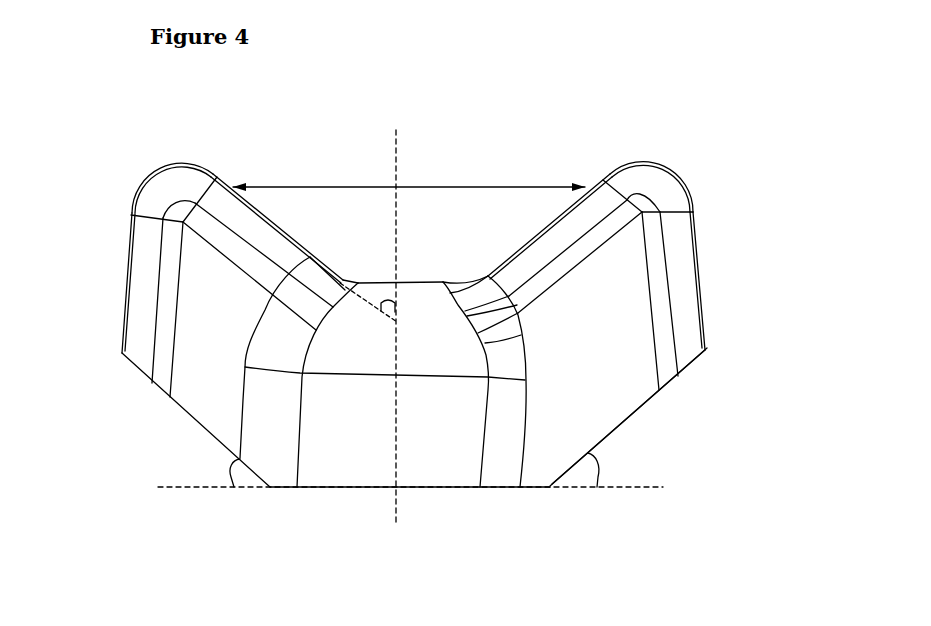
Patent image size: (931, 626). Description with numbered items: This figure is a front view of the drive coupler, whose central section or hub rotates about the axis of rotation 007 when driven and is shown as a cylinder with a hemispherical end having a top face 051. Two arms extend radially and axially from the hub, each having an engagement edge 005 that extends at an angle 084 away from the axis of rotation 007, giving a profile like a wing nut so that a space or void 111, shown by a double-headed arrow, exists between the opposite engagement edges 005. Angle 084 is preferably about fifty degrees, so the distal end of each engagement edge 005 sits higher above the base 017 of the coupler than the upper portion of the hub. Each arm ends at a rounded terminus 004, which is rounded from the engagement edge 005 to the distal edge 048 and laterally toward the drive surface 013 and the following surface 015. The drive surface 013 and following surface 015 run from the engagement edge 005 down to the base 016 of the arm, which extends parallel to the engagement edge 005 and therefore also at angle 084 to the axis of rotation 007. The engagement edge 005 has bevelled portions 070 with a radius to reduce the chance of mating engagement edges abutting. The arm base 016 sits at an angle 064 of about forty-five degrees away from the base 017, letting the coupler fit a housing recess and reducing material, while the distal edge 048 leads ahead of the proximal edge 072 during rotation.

The rounded terminus 004 is at (163, 175).
The engagement edge 005 is at (260, 208).
The axis of rotation 007 is at (396, 185).
The drive surface 013 is at (194, 313).
The following surface 015 is at (573, 333).
The base of arm 016 is at (192, 418).
The base of coupler 017 is at (347, 487).
The distal edge 048 is at (125, 282).
The top face of centre section 051 is at (424, 282).
The angle of arm base 064 is at (232, 478).
The bevelled portion 070 is at (233, 210).
The proximal edge 072 is at (525, 380).
The angle of engagement edge 084 is at (382, 307).
The space or void 111 is at (409, 180).